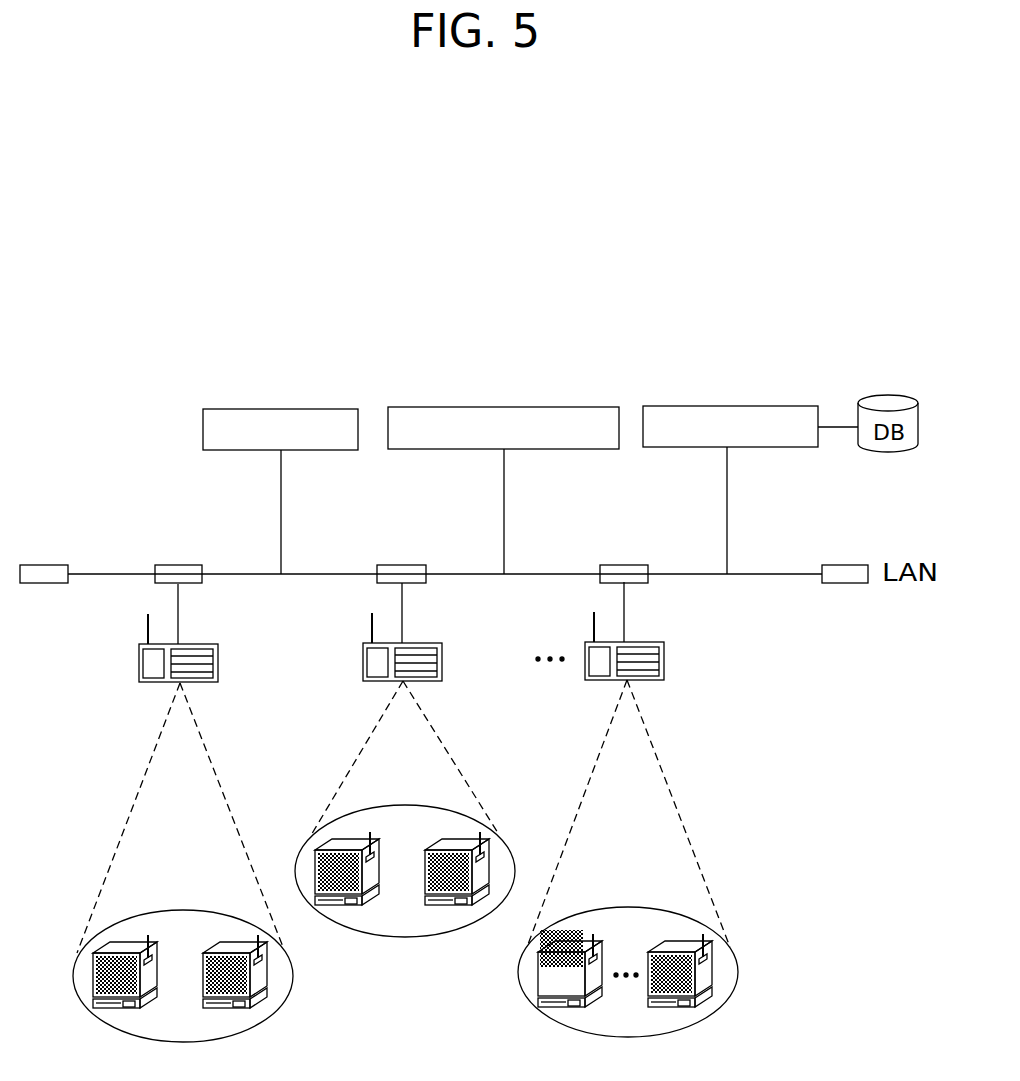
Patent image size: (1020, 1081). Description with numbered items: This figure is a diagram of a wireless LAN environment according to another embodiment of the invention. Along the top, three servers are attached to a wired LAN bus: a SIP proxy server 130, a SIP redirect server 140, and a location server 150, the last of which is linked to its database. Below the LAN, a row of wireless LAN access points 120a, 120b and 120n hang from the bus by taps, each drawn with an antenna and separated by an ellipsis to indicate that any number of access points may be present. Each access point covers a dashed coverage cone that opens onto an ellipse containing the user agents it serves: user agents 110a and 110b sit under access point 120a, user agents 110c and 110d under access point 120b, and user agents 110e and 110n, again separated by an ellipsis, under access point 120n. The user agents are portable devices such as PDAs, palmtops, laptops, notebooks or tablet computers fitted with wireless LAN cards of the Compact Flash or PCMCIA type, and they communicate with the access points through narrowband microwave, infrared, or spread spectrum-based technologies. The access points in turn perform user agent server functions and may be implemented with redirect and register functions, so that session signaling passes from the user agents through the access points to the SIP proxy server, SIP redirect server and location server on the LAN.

The SIP proxy server 130 is at (334, 409).
The SIP redirect server 140 is at (592, 407).
The location server 150 is at (792, 406).
The access point 120a is at (219, 662).
The access point 120b is at (443, 661).
The access point 120n is at (665, 659).
The user agent 110a is at (128, 940).
The user agent 110b is at (235, 940).
The user agent 110c is at (352, 837).
The user agent 110d is at (453, 837).
The user agent 110e is at (575, 930).
The user agent 110n is at (682, 940).